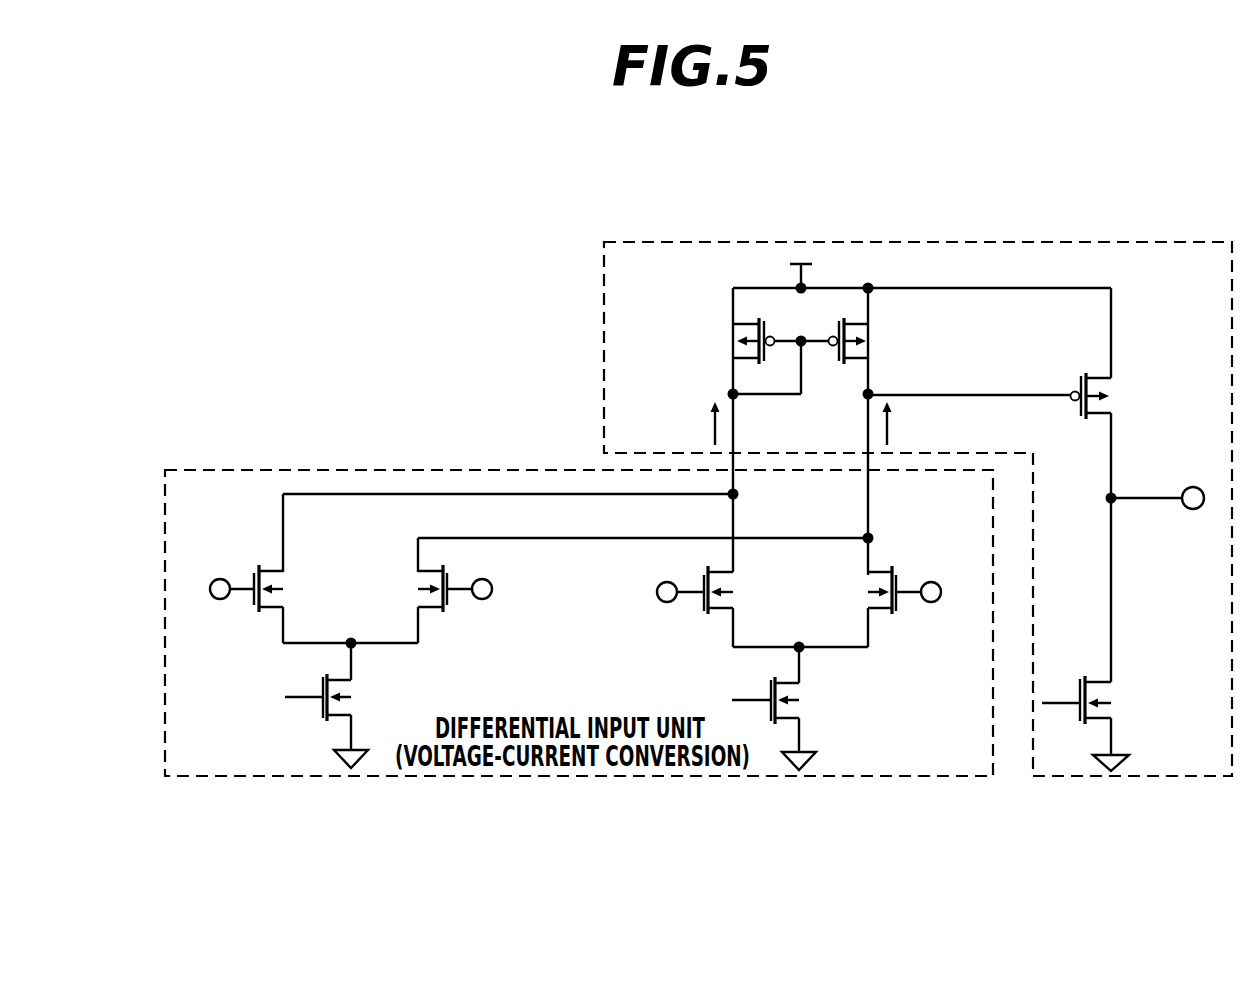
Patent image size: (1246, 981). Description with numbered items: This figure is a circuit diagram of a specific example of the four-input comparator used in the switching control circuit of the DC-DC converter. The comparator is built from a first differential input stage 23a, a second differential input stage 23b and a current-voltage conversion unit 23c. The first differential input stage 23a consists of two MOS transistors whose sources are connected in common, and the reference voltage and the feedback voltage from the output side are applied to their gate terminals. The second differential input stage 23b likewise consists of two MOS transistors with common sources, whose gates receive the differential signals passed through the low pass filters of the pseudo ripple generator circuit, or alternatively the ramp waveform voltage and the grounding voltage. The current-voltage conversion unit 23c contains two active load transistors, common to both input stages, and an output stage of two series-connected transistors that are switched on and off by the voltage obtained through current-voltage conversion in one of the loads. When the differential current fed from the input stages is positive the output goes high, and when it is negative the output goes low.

The first differential input stage 23a is at (874, 664).
The second differential input stage 23b is at (264, 659).
The current-voltage conversion unit 23c is at (593, 303).